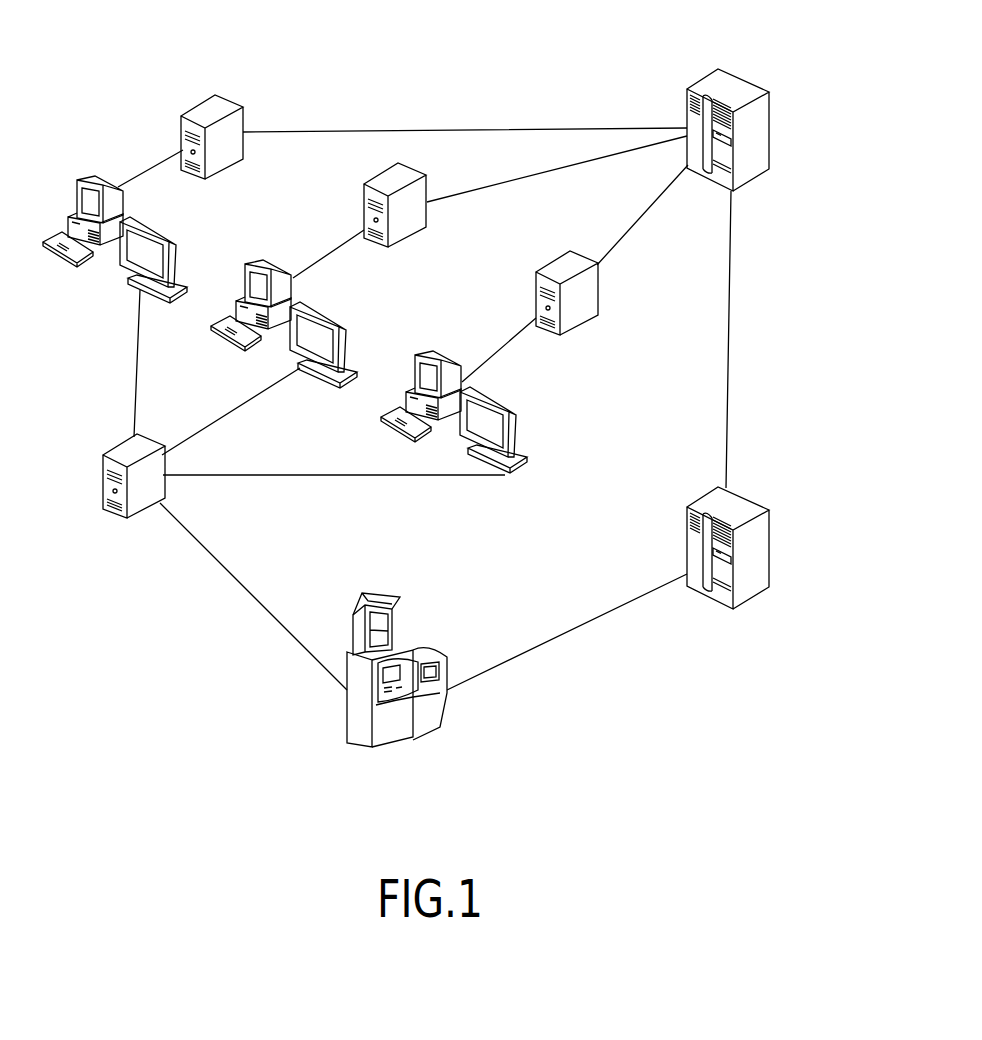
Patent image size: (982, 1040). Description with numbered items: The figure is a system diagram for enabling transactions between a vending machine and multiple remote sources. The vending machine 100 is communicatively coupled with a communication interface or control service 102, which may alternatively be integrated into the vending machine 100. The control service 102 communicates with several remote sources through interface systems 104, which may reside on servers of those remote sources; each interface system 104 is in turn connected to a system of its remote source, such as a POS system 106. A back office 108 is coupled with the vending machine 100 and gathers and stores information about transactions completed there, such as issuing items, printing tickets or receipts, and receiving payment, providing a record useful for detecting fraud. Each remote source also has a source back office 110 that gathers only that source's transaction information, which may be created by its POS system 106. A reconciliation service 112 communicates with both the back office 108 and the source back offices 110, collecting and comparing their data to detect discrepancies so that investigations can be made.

The vending machine 100 is at (437, 652).
The control service 102 is at (152, 435).
The interface systems 104 is at (175, 243).
The POS system 106 is at (98, 180).
The back office 108 is at (760, 507).
The source back office 110 is at (232, 92).
The reconciliation service 112 is at (720, 66).